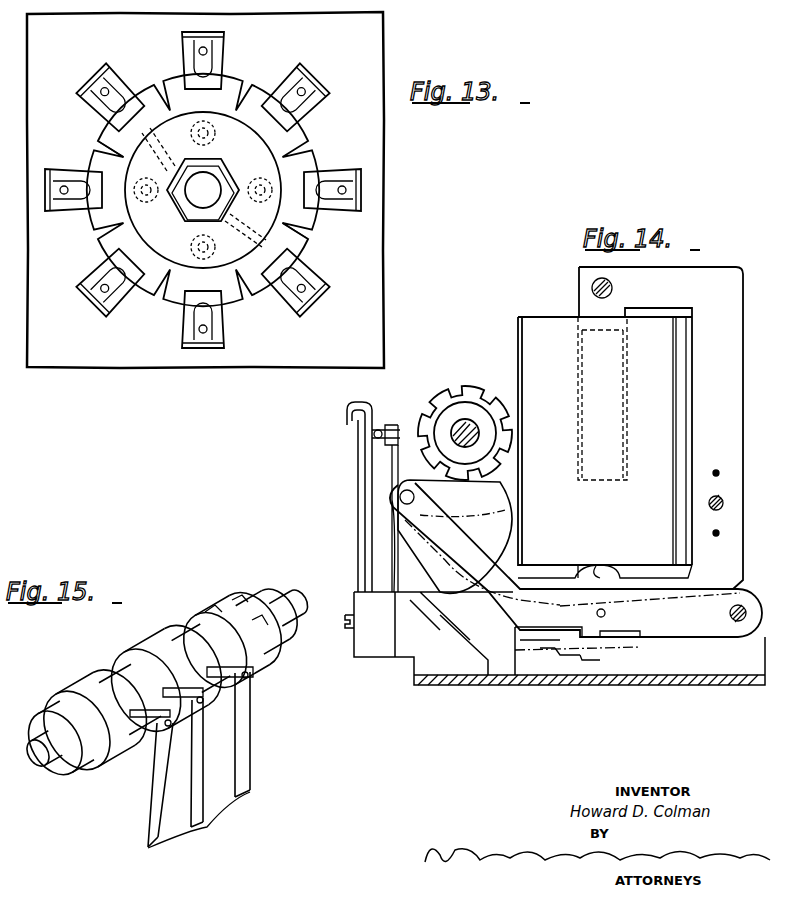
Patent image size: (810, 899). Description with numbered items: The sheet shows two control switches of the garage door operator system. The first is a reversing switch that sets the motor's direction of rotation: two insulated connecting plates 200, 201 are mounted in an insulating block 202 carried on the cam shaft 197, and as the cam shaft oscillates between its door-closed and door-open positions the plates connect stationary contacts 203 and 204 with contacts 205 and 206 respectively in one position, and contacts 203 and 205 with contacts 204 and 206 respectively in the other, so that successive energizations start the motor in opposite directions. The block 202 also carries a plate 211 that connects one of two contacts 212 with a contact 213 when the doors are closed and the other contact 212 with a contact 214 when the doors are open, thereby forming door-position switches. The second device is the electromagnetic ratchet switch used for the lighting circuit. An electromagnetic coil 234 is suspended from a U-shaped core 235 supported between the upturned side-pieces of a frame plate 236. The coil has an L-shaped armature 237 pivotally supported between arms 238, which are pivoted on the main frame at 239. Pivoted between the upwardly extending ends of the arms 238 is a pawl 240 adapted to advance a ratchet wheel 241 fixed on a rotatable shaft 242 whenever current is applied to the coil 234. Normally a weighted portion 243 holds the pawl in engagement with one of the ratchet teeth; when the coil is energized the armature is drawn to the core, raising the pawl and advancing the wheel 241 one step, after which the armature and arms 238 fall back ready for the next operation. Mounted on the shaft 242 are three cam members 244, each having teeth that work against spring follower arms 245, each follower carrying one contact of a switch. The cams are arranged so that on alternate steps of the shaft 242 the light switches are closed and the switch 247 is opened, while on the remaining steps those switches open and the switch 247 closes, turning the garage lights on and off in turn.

In FIG. 13, the cam shaft 197 is at (212, 190).
In FIG. 13, the connecting plate 200 is at (262, 140).
In FIG. 13, the connecting plate 201 is at (116, 217).
In FIG. 13, the insulating block 202 is at (230, 230).
In FIG. 13, the stationary contact 203 is at (210, 82).
In FIG. 13, the stationary contact 204 is at (87, 197).
In FIG. 13, the contact 205 is at (317, 180).
In FIG. 13, the contact 206 is at (208, 302).
In FIG. 13, the plate 211 is at (105, 134).
In FIG. 13, the contact 212 is at (130, 97).
In FIG. 13, the contact 213 is at (288, 267).
In FIG. 13, the contact 214 is at (137, 280).
In FIG. 14, the electromagnetic coil 234 is at (528, 342).
In FIG. 14, the U-shaped core 235 is at (733, 320).
In FIG. 14, the frame plate 236 is at (660, 682).
In FIG. 14, the L-shaped armature 237 is at (572, 577).
In FIG. 14, the arms 238 is at (590, 618).
In FIG. 14, the pivot 239 is at (730, 613).
In FIG. 14, the pawl 240 is at (396, 470).
In FIG. 14, the ratchet wheel 241 is at (458, 392).
In FIG. 15, the ratchet wheel 241 is at (238, 600).
In FIG. 14, the rotatable shaft 242 is at (472, 440).
In FIG. 15, the rotatable shaft 242 is at (38, 757).
In FIG. 14, the weighted portion 243 is at (495, 507).
In FIG. 15, the cam member 244 is at (72, 686).
In FIG. 14, the spring follower arm 245 is at (395, 455).
In FIG. 15, the spring follower arm 245 is at (216, 825).
In FIG. 14, the switch 247 is at (370, 445).